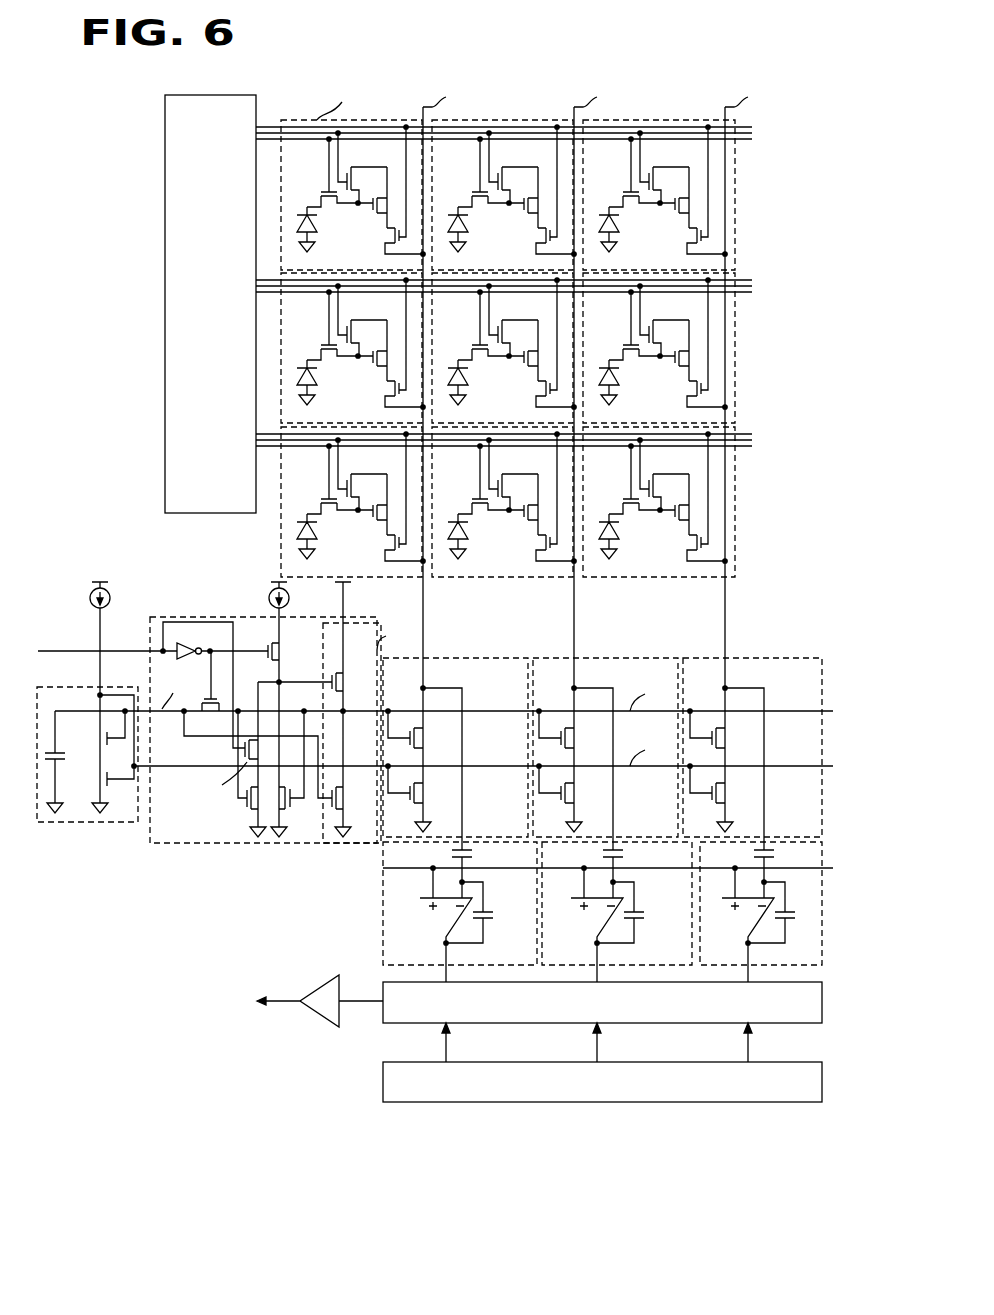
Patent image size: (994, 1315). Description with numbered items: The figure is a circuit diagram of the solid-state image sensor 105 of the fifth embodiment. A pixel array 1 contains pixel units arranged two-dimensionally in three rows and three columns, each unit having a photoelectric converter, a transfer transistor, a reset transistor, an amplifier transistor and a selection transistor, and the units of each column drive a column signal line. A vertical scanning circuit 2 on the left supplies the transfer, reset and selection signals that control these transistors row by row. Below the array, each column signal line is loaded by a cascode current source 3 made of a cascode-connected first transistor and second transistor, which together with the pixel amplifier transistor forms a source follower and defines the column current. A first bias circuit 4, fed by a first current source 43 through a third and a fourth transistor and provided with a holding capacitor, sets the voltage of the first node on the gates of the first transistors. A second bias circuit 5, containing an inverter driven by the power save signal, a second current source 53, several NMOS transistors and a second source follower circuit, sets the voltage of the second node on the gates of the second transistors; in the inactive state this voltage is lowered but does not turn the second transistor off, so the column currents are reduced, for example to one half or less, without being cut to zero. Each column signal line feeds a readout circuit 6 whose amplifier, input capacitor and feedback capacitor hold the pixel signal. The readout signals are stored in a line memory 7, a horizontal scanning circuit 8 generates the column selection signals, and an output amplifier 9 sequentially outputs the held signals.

The pixel array 1 is at (748, 352).
The vertical scanning circuit 2 is at (226, 513).
The cascode current source 3 is at (455, 658).
The first bias circuit 4 is at (115, 687).
The second bias circuit 5 is at (363, 617).
The readout circuit 6 is at (380, 919).
The line memory 7 is at (383, 992).
The horizontal scanning circuit 8 is at (383, 1075).
The output amplifier 9 is at (317, 990).
The first current source 43 is at (110, 609).
The second current source 53 is at (289, 600).
The solid-state image sensor 105 is at (421, 1172).